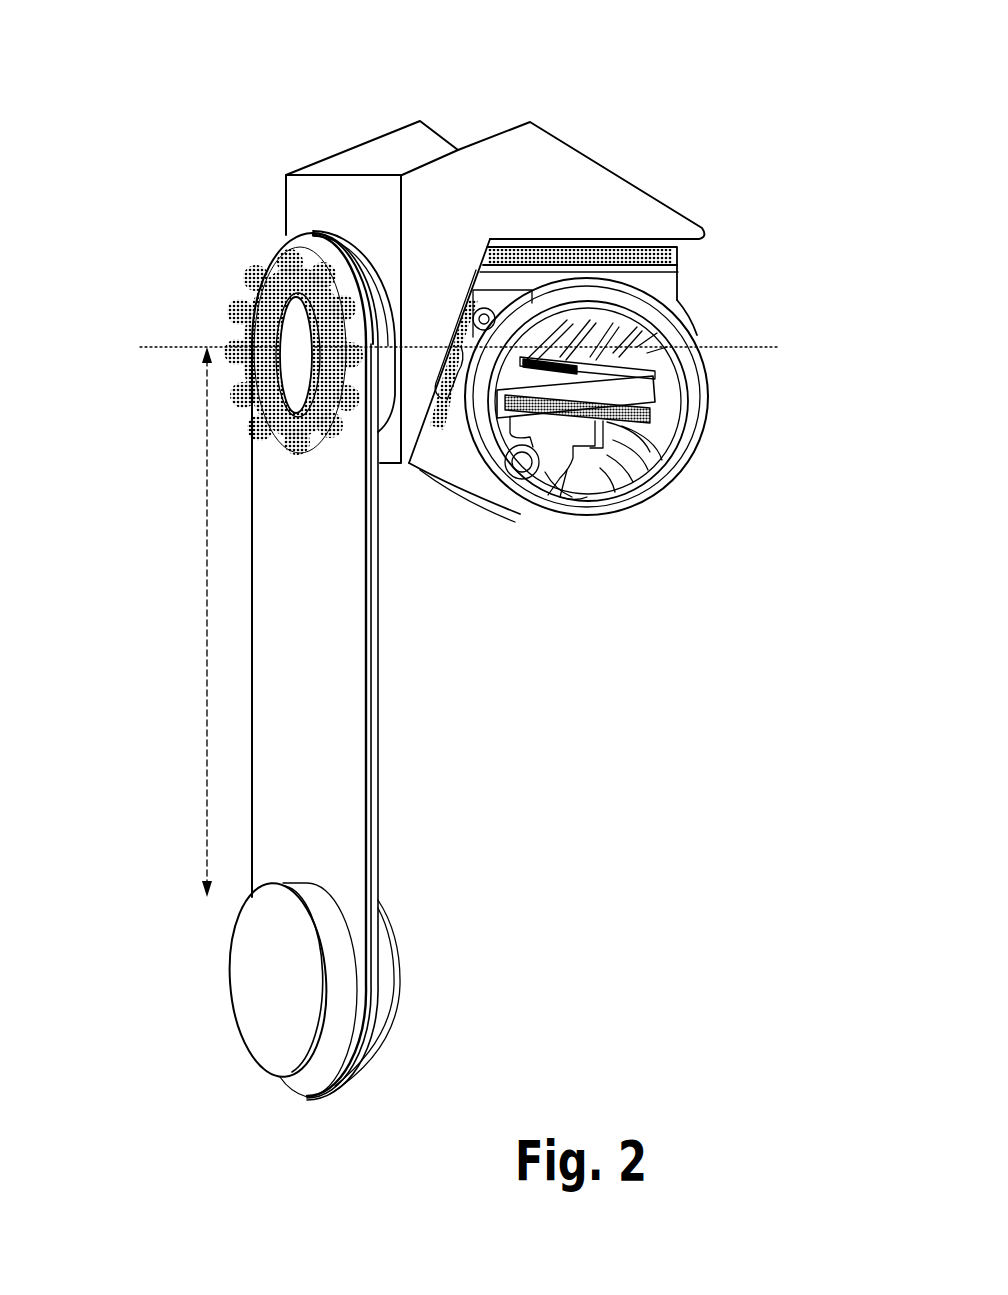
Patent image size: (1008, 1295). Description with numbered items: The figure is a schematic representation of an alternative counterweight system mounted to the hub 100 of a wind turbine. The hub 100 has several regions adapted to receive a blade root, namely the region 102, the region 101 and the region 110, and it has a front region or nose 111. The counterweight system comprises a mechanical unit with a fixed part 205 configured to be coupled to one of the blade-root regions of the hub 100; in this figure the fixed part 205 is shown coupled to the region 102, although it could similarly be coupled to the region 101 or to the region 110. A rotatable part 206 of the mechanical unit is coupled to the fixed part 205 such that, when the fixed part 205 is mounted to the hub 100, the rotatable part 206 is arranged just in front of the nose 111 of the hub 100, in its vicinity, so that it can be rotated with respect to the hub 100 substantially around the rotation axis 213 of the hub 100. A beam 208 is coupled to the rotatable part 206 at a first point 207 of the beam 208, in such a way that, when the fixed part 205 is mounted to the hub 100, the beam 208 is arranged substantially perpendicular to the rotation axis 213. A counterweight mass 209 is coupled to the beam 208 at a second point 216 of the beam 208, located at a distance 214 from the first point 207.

The hub 100 is at (690, 508).
The region 101 is at (685, 417).
The region 102 is at (665, 255).
The region 110 is at (474, 462).
The front region (nose) 111 is at (442, 435).
The fixed part 205 is at (312, 142).
The rotatable part 206 is at (363, 262).
The first point 207 is at (265, 270).
The beam 208 is at (335, 755).
The counterweight mass 209 is at (263, 963).
The rotation axis 213 is at (152, 346).
The distance 214 is at (205, 638).
The second point 216 is at (345, 903).